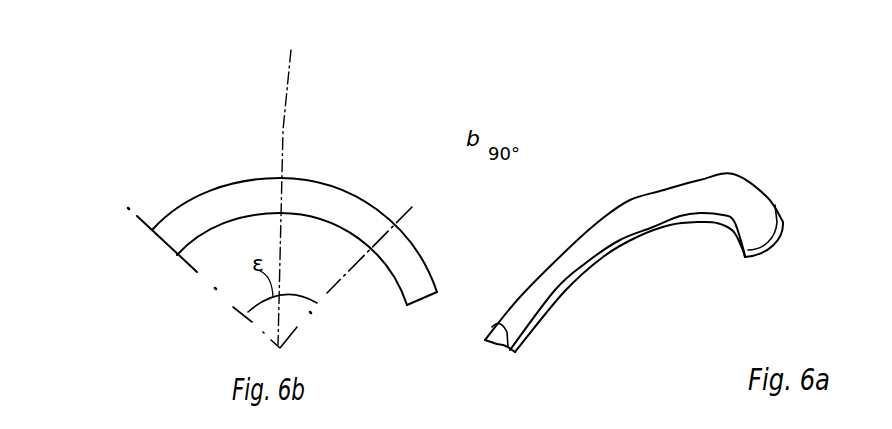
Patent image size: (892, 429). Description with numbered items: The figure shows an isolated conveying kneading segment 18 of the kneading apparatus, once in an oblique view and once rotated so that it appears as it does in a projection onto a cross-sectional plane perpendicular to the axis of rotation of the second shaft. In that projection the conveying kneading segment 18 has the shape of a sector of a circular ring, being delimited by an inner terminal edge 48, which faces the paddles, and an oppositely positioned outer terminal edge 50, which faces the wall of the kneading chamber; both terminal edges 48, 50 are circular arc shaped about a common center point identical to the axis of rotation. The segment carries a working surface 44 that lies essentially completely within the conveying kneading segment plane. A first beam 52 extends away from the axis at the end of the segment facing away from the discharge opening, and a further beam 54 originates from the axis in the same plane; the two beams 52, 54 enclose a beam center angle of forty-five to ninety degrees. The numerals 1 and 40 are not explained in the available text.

In FIG. 6b, the curved profile strip assembly 1 is at (55, 167).
In FIG. 6a, the conveying kneading segment 18 is at (673, 190).
In FIG. 6b, the central axis 40 is at (312, 184).
In FIG. 6b, the working surface 44 is at (236, 198).
In FIG. 6a, the working surface 44 is at (633, 212).
In FIG. 6b, the inner terminal edge 48 is at (303, 217).
In FIG. 6b, the outer terminal edge 50 is at (322, 182).
In FIG. 6b, the first beam 52 is at (92, 178).
In FIG. 6b, the further beam 54 is at (403, 237).